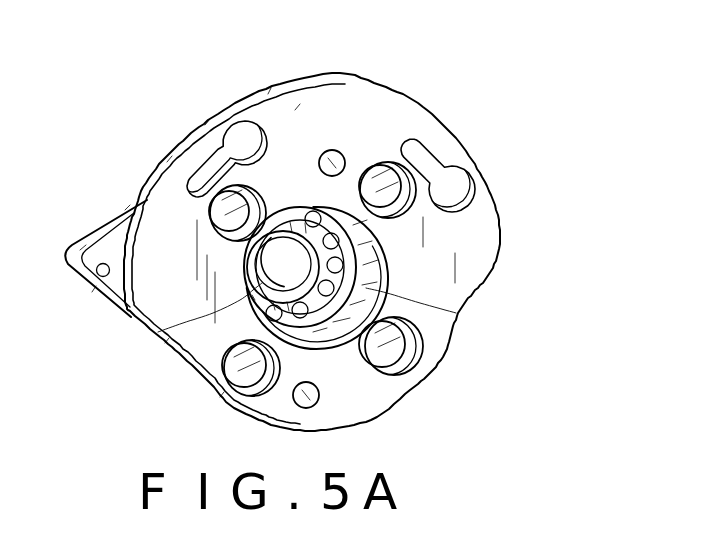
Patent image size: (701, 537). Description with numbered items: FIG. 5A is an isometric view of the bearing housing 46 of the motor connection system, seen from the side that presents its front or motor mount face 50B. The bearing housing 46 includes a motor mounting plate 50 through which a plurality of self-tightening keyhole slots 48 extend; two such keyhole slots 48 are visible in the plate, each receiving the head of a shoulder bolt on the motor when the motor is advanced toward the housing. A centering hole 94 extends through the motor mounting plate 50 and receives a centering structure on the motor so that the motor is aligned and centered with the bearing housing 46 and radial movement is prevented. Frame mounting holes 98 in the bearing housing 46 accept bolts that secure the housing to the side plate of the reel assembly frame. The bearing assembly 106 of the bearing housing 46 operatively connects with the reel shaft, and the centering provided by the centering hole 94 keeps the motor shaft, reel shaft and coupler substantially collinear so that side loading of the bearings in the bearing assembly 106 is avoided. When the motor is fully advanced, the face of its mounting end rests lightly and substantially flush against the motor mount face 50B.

The bearing housing 46 is at (310, 228).
The self-tightening keyhole slot 48 is at (240, 130).
The motor mounting plate 50 is at (450, 137).
The motor mount face 50B is at (308, 118).
The centering hole 94 is at (457, 313).
The frame mounting hole 98 is at (227, 203).
The bearing assembly 106 is at (158, 332).